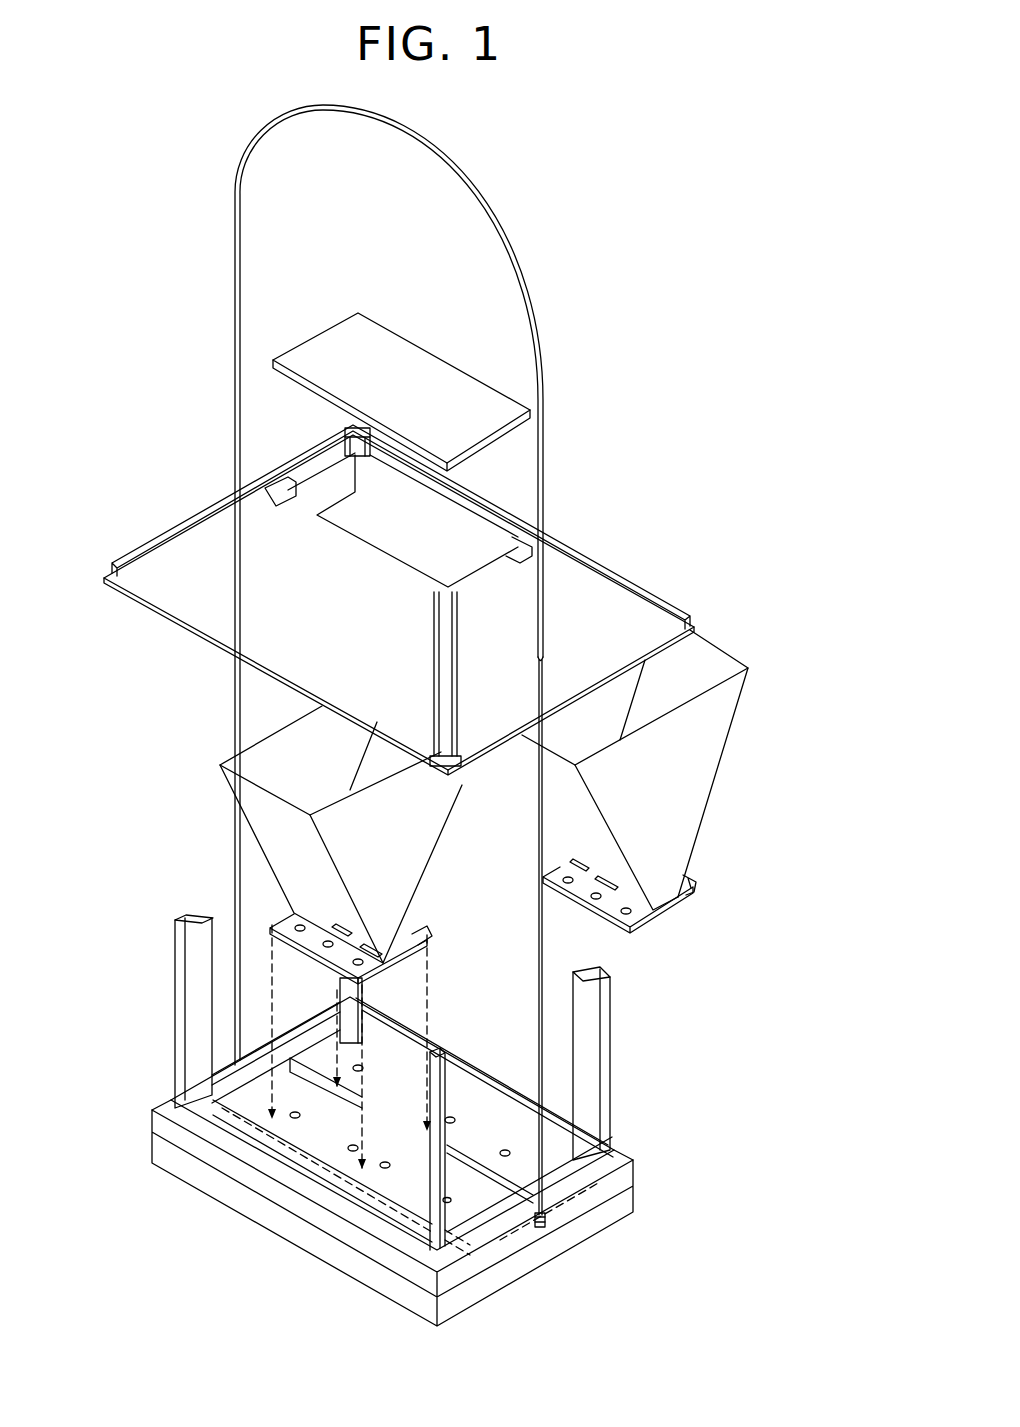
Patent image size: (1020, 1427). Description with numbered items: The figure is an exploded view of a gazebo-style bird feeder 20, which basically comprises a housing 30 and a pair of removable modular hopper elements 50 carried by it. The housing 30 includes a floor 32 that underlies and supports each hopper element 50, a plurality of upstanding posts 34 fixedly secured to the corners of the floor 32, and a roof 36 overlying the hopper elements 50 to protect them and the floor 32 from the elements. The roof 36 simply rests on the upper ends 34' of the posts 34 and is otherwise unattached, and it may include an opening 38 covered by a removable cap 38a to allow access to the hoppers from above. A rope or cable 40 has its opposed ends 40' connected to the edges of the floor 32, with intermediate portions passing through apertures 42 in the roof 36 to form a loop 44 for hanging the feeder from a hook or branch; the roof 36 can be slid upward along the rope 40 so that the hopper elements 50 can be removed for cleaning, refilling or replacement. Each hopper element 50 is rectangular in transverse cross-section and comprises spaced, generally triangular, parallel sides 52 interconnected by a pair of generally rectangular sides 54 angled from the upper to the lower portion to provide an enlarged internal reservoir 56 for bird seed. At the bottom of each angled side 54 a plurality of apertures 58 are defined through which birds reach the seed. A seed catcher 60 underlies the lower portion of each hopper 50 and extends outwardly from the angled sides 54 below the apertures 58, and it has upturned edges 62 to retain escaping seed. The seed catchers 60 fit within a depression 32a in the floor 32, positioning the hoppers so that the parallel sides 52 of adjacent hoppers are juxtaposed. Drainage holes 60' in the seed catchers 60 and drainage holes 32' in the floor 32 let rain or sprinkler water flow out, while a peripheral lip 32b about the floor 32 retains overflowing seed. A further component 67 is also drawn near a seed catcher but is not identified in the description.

The gazebo-style bird feeder 20 is at (656, 528).
The housing 30 is at (120, 970).
The floor 32 is at (413, 1125).
The drainage holes 32' is at (436, 1090).
The depression 32a is at (300, 1138).
The peripheral lip 32b is at (560, 1133).
The upstanding posts 34 is at (406, 1085).
The upper ends of posts 34' is at (417, 966).
The roof 36 is at (585, 604).
The opening 38 is at (430, 553).
The removable cap 38a is at (395, 345).
The rope or cable 40 is at (425, 701).
The opposed ends of rope 40' is at (556, 1263).
The apertures in roof 42 is at (546, 655).
The loop 44 is at (447, 163).
The modular hopper elements 50 is at (441, 899).
The parallel sides 52 is at (380, 742).
The angled sides 54 is at (270, 805).
The internal cavity or reservoir 56 is at (280, 757).
The apertures 58 is at (371, 950).
The seed catcher 60 is at (568, 914).
The drainage holes in seed catchers 60' is at (351, 949).
The upturned edges 62 is at (314, 950).
The clip 67 is at (696, 880).